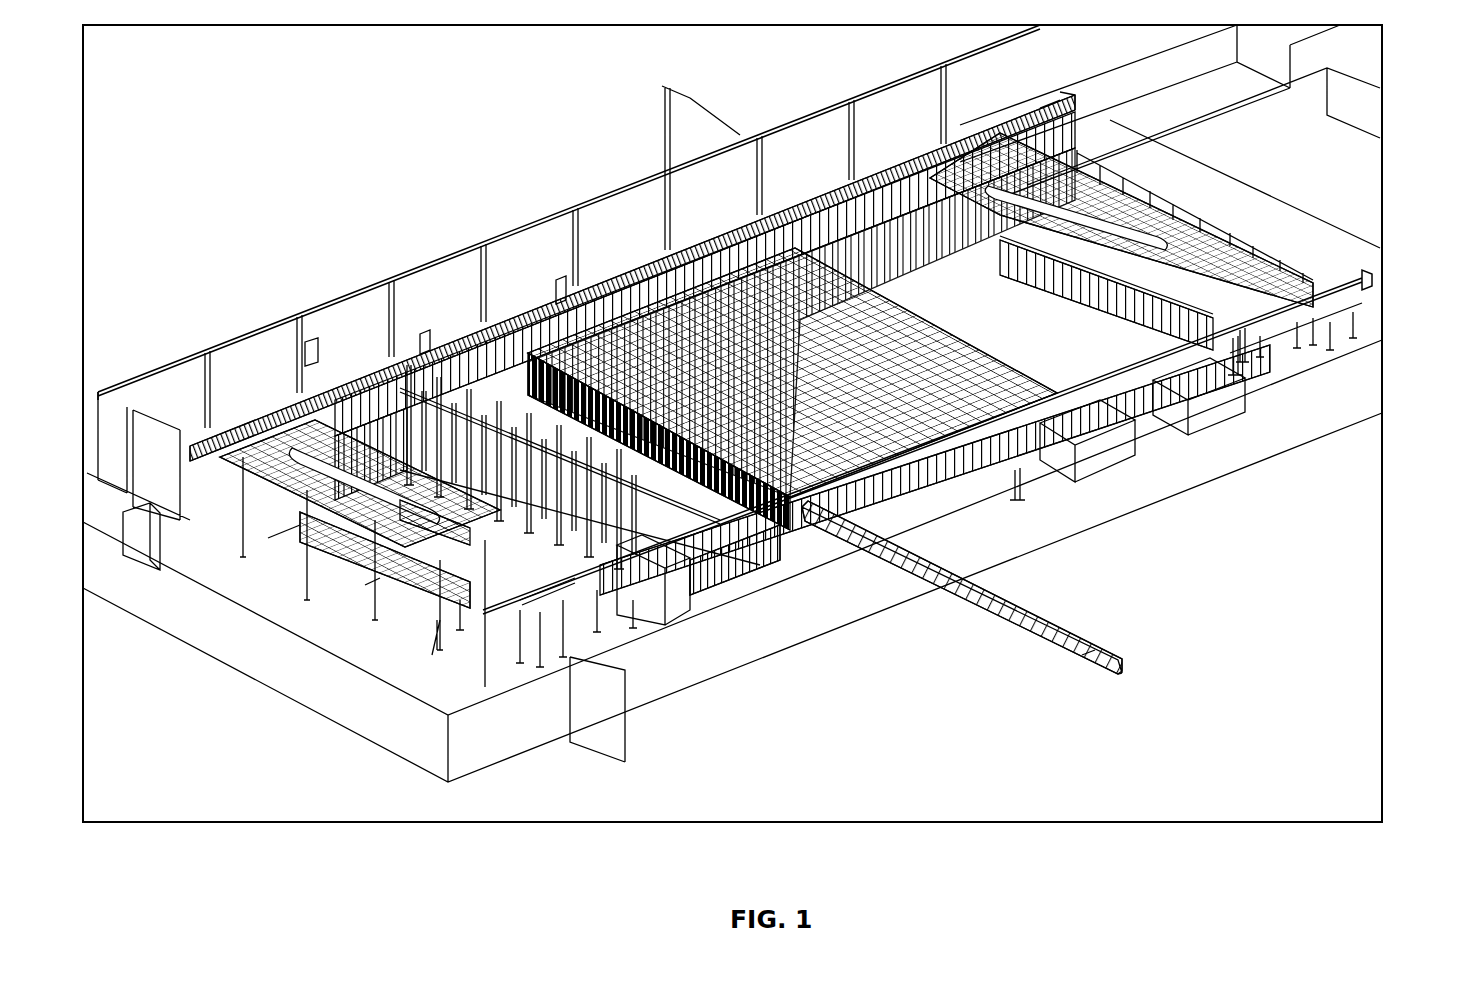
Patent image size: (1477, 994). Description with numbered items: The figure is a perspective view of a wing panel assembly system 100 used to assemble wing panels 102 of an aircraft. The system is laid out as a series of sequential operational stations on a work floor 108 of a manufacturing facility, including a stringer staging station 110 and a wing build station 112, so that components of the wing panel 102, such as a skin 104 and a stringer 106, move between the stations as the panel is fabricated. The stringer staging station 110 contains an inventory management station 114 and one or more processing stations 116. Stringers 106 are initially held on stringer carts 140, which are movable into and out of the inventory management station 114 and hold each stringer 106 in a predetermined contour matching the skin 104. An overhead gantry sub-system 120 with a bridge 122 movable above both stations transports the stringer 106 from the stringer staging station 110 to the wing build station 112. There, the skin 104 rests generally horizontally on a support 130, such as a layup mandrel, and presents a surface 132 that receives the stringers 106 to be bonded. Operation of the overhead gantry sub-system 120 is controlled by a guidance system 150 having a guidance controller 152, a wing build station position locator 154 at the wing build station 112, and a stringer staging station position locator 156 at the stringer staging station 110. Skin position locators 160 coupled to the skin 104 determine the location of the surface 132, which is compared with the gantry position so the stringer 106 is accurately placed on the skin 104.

The wing panel assembly system 100 is at (536, 68).
The wing panel 102 is at (432, 655).
The skin 104 is at (530, 590).
The stringer 106 is at (1075, 640).
The work floor 108 is at (1018, 472).
The stringer staging station 110 is at (720, 210).
The wing build station 112 is at (915, 116).
The inventory management station 114 is at (558, 276).
The processing station 116 is at (420, 330).
The overhead gantry sub-system 120 is at (310, 338).
The bridge 122 is at (678, 593).
The support 130 is at (590, 595).
The surface 132 is at (268, 538).
The stringer cart 140 is at (1082, 655).
The guidance system 150 is at (357, 560).
The guidance controller 152 is at (520, 382).
The wing build station position locator 154 is at (365, 585).
The stringer staging station position locator 156 is at (737, 580).
The skin position locator 160 is at (570, 587).